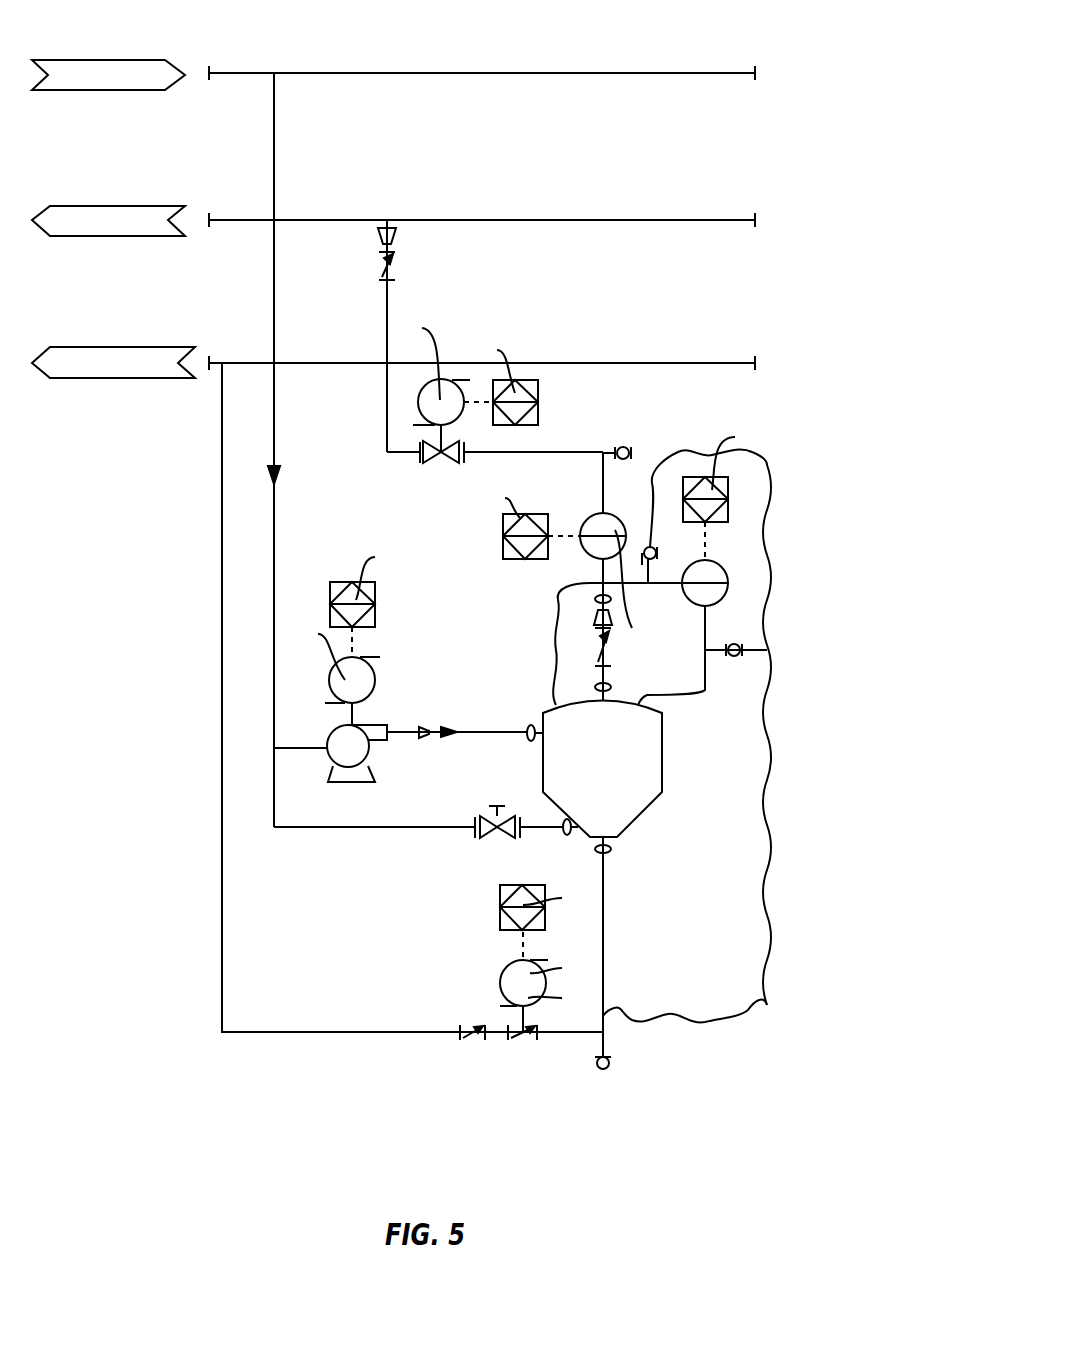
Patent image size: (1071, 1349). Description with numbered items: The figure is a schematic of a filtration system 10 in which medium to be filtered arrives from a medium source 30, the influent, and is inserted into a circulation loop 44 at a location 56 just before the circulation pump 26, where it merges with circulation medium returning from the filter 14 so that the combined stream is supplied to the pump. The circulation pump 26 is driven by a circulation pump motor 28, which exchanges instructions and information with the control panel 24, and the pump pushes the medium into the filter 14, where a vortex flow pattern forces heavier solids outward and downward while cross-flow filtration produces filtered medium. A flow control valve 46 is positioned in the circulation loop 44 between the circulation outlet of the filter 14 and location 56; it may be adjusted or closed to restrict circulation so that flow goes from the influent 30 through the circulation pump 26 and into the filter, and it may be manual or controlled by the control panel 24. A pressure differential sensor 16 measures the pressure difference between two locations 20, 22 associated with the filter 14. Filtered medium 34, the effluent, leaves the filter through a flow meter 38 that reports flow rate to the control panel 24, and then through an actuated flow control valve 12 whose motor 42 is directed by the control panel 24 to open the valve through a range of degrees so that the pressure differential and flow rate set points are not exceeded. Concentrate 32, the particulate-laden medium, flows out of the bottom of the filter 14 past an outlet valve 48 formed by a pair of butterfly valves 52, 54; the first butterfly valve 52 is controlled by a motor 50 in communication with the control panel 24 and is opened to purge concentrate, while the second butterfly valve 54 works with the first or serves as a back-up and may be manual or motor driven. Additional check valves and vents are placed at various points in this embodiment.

The filtration system 10 is at (920, 266).
The actuated flow control valve 12 is at (437, 464).
The filter 14 is at (650, 805).
The pressure differential sensor 16 is at (728, 587).
The location 20 is at (556, 705).
The location 22 is at (647, 703).
The control panel 24 is at (540, 410).
The circulation pump 26 is at (368, 748).
The circulation pump motor 28 is at (372, 687).
The medium source 30 is at (143, 60).
The concentrate 32 is at (150, 380).
The filtered medium 34 is at (167, 204).
The flow meter 38 is at (590, 515).
The motor 42 is at (418, 410).
The circulation loop 44 is at (348, 853).
The flow control valve 46 is at (483, 836).
The outlet valve 48 is at (463, 1125).
The motor 50 is at (502, 995).
The butterfly valve 52 is at (535, 1040).
The butterfly valve 54 is at (460, 1040).
The location 56 is at (277, 748).